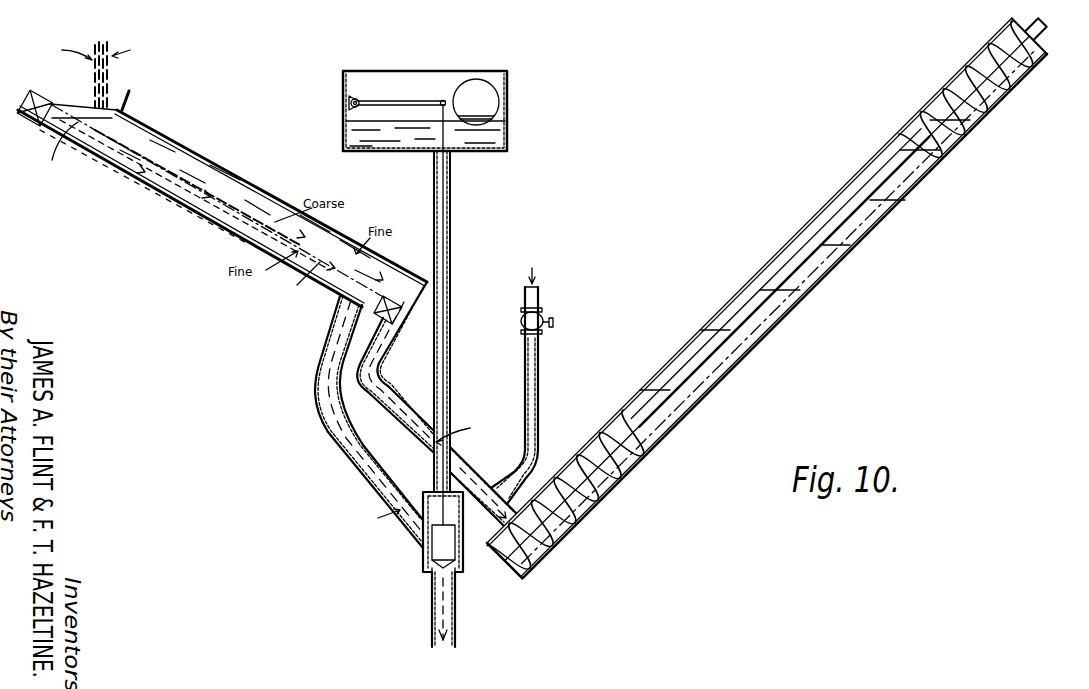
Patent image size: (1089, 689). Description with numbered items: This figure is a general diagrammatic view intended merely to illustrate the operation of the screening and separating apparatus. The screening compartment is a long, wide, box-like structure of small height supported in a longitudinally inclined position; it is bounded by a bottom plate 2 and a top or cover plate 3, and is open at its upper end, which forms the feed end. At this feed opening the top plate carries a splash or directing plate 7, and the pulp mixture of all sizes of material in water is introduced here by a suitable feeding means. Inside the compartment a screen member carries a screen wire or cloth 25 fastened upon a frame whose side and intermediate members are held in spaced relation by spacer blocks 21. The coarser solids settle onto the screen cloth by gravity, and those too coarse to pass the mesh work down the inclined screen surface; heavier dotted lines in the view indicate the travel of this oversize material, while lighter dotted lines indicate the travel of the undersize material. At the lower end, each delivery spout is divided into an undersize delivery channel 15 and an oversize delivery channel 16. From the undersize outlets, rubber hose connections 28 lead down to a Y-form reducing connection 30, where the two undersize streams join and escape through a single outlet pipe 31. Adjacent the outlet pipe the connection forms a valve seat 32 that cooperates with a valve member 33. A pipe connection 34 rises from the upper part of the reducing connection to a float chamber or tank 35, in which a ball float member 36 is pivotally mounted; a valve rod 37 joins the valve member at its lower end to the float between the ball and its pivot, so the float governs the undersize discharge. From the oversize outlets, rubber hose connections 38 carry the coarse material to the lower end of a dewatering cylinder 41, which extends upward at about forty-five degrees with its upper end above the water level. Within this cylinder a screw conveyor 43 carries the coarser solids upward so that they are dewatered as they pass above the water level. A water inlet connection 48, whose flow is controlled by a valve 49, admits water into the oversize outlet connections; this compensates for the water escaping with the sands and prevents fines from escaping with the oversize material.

The bottom plate 2 is at (222, 228).
The top or cover plate 3 is at (268, 204).
The splash or directing plate 7 is at (130, 99).
The undersize delivery channel 15 is at (345, 327).
The oversize delivery channel 16 is at (394, 338).
The spacer blocks 21 is at (42, 99).
The screen wire or cloth 25 is at (182, 214).
The rubber hose connections 28 is at (370, 477).
The reducing connection 30 is at (432, 512).
The single outlet pipe 31 is at (448, 623).
The valve seat 32 is at (428, 573).
The valve member 33 is at (447, 552).
The pipe connection 34 is at (452, 388).
The float chamber or tank 35 is at (432, 82).
The ball float member 36 is at (488, 102).
The valve rod 37 is at (452, 246).
The rubber hose connections 38 is at (460, 462).
The dewatering cylinder 41 is at (890, 138).
The screw conveyor 43 is at (1003, 93).
The water inlet connection 48 is at (540, 416).
The valve 49 is at (540, 318).